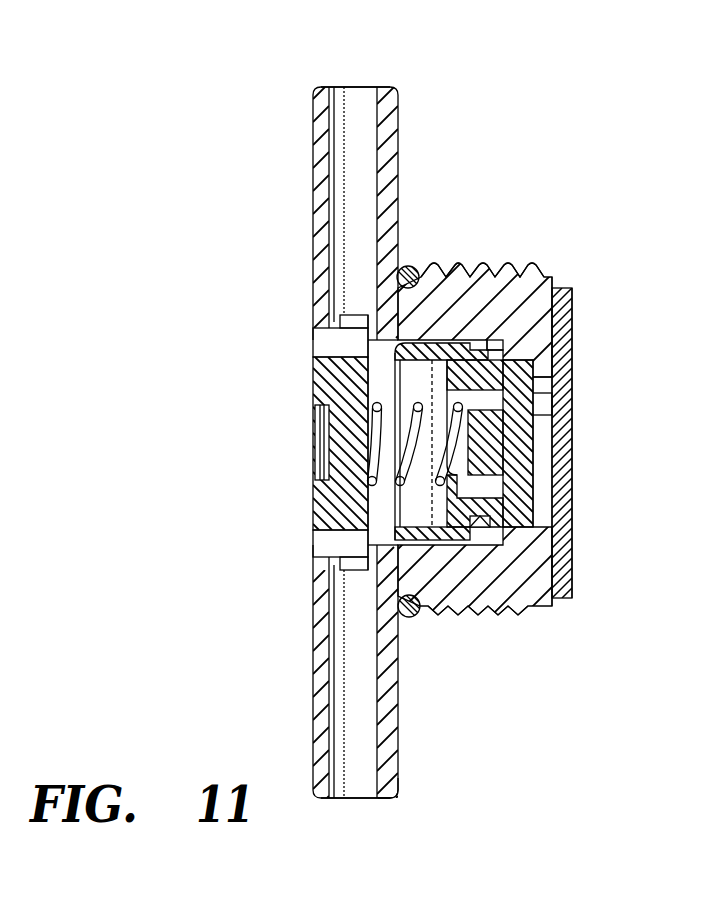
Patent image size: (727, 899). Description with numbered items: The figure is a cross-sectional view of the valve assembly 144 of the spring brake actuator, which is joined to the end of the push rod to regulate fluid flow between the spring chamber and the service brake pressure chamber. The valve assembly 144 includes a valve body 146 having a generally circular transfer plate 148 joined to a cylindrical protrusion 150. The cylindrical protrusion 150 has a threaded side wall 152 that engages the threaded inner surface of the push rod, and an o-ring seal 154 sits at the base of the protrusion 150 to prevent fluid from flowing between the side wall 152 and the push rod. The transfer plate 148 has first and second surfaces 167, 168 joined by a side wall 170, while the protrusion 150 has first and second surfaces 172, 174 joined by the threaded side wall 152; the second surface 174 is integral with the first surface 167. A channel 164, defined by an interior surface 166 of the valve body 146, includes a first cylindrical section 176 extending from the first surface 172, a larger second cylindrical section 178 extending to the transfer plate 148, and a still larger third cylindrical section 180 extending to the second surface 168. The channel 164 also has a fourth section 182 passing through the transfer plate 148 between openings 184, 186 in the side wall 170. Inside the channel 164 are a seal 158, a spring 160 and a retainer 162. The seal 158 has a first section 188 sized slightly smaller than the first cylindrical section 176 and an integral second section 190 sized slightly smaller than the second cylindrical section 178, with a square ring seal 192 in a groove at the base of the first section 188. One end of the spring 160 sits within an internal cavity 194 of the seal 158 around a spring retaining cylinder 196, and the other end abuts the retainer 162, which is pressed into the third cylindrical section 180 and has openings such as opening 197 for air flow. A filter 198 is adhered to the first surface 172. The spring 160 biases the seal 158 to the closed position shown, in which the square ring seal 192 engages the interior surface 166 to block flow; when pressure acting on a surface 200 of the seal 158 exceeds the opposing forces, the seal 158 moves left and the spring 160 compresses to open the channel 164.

The valve assembly 144 is at (462, 188).
The valve body 146 is at (399, 128).
The transfer plate 148 is at (323, 135).
The cylindrical protrusion 150 is at (520, 270).
The threaded side wall 152 is at (520, 615).
The o-ring seal 154 is at (412, 268).
The seal 158 is at (553, 352).
The spring 160 is at (372, 470).
The retainer 162 is at (398, 380).
The channel 164 is at (545, 481).
The interior surface 166 is at (470, 338).
The first surface 167 is at (398, 725).
The second surface 168 is at (322, 700).
The side wall 170 is at (396, 795).
The first surface 172 is at (562, 289).
The second surface 174 is at (388, 293).
The first cylindrical section 176 is at (543, 434).
The second cylindrical section 178 is at (350, 563).
The third cylindrical section 180 is at (340, 323).
The fourth section 182 is at (350, 740).
The opening 184 is at (355, 86).
The opening 186 is at (355, 800).
The first section 188 is at (553, 410).
The second section 190 is at (470, 540).
The square ring seal 192 is at (480, 530).
The internal cavity 194 is at (400, 394).
The spring retaining cylinder 196 is at (490, 452).
The opening 197 is at (330, 545).
The filter 198 is at (573, 305).
The surface 200 is at (573, 388).